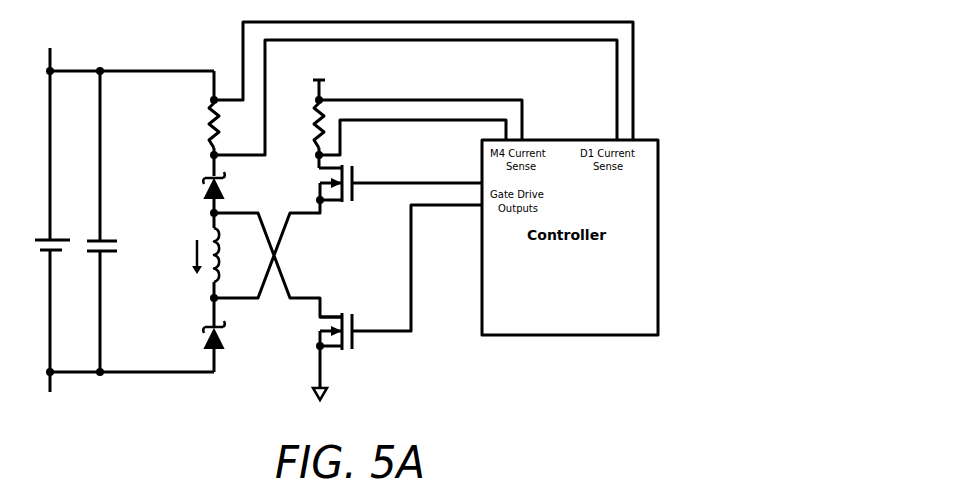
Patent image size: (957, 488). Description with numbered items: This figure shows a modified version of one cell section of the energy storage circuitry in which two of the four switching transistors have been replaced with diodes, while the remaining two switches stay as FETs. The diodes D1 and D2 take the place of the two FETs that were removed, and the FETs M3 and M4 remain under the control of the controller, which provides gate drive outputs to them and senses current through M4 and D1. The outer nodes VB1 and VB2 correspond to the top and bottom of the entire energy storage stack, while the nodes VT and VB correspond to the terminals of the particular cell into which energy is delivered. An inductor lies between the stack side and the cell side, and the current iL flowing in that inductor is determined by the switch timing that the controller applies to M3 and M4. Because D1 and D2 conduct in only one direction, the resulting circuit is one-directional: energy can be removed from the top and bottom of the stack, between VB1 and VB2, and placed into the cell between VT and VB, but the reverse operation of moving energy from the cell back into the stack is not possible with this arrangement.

The diode D1 is at (201, 176).
The diode D2 is at (201, 326).
The FET M3 is at (350, 330).
The FET M4 is at (350, 183).
The inductor current iL is at (190, 257).
The top of the energy storage stack VB1 is at (46, 49).
The bottom of the energy storage stack VB2 is at (46, 395).
The top terminal of the cell VT is at (317, 82).
The bottom terminal of the cell VB is at (329, 400).